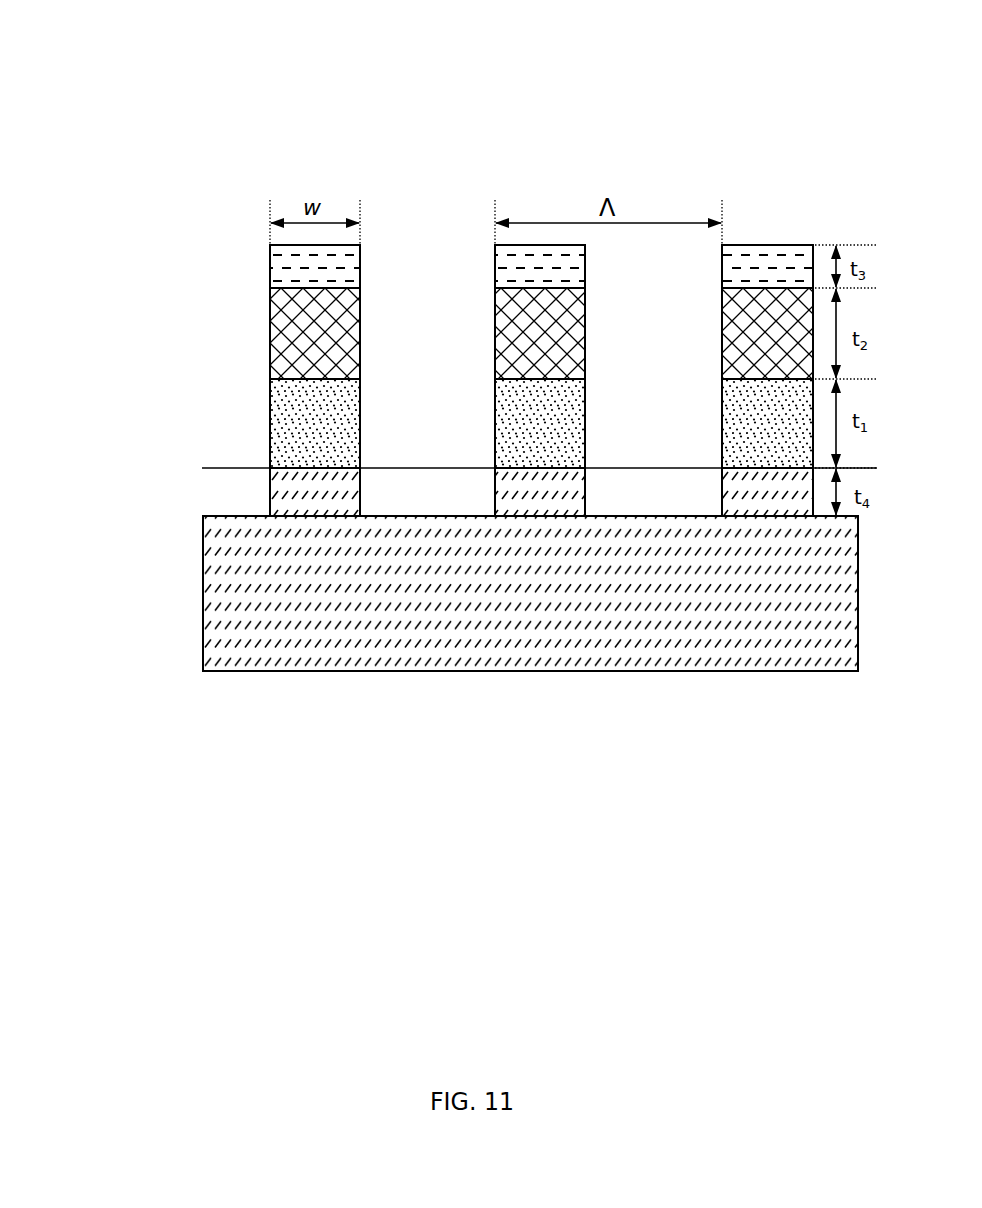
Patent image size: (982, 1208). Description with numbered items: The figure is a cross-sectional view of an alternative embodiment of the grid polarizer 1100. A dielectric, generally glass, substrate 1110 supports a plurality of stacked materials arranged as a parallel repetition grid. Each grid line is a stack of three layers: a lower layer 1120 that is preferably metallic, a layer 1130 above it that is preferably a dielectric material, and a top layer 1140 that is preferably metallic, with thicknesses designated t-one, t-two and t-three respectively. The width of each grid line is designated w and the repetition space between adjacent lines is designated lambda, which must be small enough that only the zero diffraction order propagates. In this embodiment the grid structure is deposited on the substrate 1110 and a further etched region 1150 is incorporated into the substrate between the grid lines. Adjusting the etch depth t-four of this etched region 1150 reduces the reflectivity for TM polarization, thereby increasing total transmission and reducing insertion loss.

The grid polarizer 1100 is at (424, 110).
The substrate 1110 is at (212, 669).
The metallic layer 1120 is at (268, 425).
The dielectric layer 1130 is at (268, 333).
The metallic layer 1140 is at (268, 270).
The substrate etched region 1150 is at (650, 517).